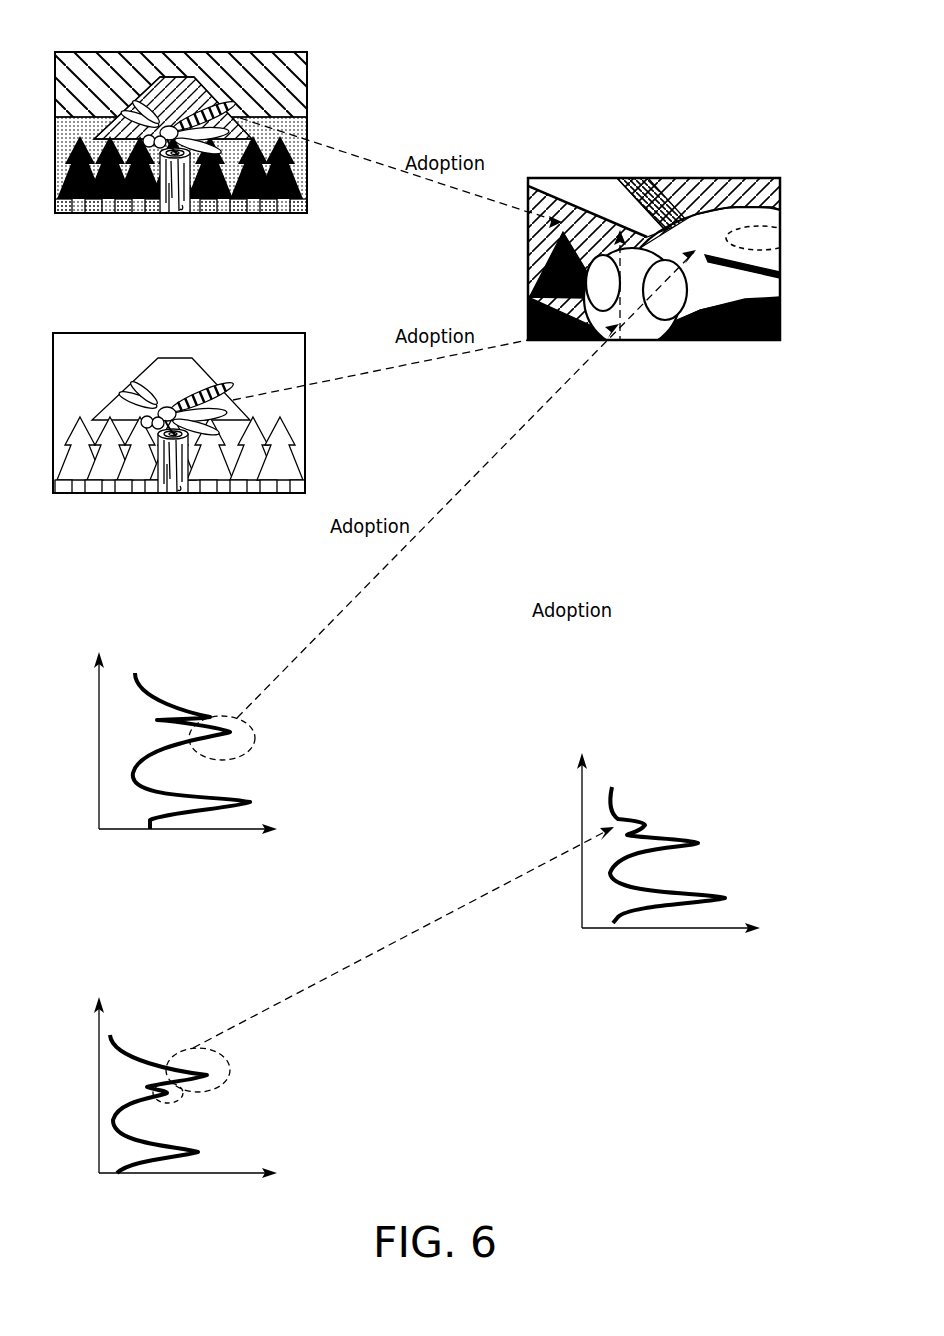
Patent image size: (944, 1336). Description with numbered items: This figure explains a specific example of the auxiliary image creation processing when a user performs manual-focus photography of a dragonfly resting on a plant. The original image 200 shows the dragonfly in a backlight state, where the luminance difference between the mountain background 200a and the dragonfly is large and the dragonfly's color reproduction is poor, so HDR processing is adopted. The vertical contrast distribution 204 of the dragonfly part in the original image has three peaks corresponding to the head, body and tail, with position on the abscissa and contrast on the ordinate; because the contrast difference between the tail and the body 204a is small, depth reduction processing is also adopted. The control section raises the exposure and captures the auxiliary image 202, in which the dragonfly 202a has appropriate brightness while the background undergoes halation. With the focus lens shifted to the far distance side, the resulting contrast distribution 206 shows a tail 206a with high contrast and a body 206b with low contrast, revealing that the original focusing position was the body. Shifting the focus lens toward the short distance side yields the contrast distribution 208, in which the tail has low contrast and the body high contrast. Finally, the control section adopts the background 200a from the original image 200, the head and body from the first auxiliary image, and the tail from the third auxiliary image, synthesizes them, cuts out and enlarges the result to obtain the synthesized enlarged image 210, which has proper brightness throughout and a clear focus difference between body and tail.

The original image 200 is at (185, 110).
The background 200a is at (170, 77).
The auxiliary image 202 is at (183, 388).
The dragonfly 202a is at (166, 408).
The contrast distribution 204 is at (225, 696).
The body 204a is at (255, 740).
The contrast distribution 206 is at (188, 1040).
The tail 206a is at (230, 1070).
The body 206b is at (178, 1102).
The contrast distribution 208 is at (698, 826).
The synthesized enlarged image 210 is at (760, 188).